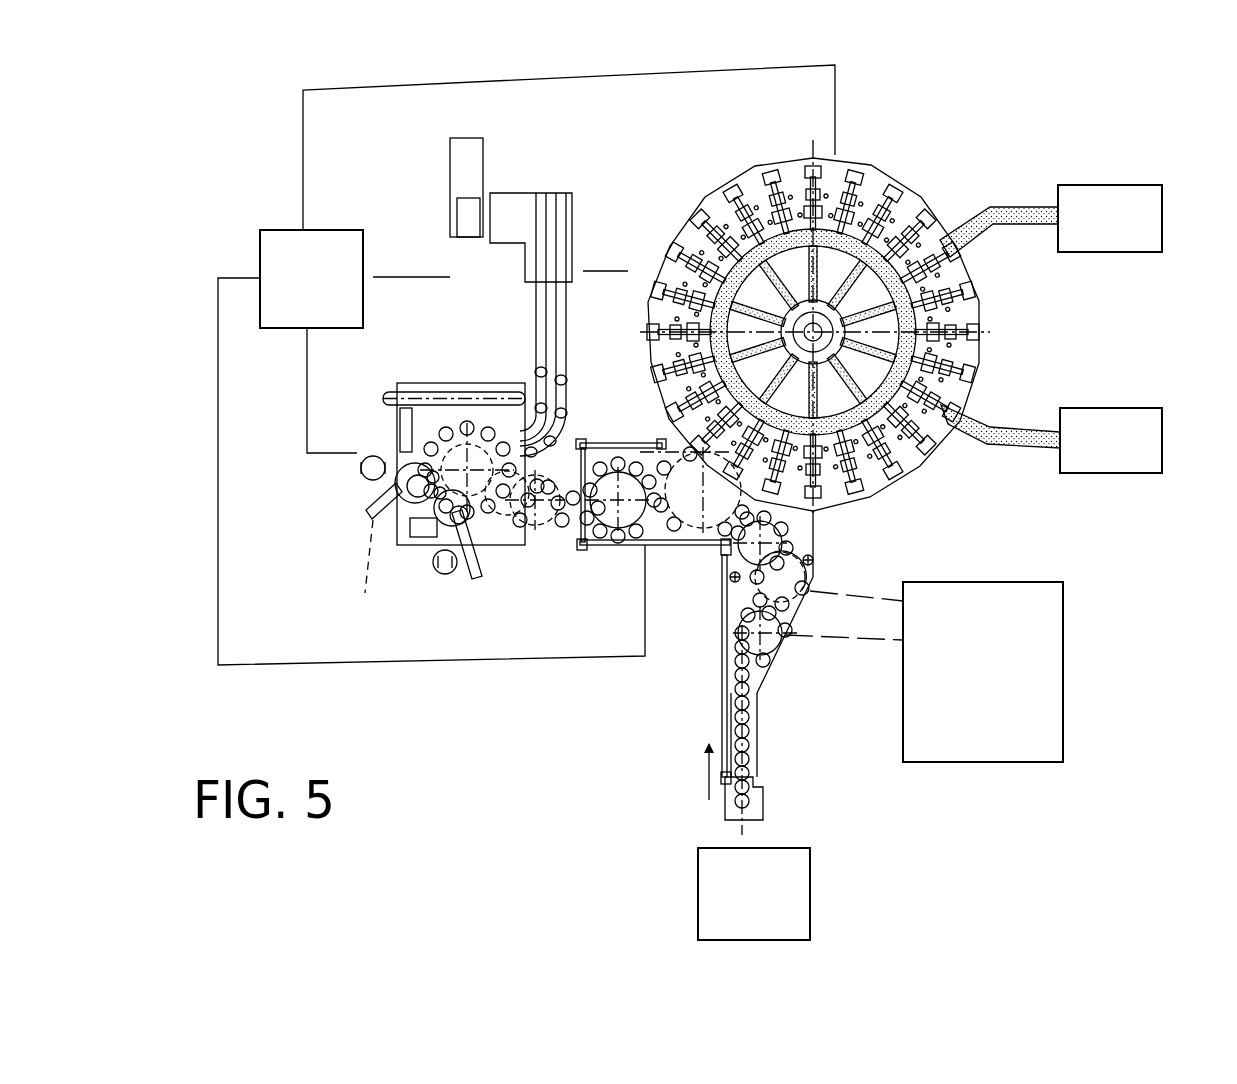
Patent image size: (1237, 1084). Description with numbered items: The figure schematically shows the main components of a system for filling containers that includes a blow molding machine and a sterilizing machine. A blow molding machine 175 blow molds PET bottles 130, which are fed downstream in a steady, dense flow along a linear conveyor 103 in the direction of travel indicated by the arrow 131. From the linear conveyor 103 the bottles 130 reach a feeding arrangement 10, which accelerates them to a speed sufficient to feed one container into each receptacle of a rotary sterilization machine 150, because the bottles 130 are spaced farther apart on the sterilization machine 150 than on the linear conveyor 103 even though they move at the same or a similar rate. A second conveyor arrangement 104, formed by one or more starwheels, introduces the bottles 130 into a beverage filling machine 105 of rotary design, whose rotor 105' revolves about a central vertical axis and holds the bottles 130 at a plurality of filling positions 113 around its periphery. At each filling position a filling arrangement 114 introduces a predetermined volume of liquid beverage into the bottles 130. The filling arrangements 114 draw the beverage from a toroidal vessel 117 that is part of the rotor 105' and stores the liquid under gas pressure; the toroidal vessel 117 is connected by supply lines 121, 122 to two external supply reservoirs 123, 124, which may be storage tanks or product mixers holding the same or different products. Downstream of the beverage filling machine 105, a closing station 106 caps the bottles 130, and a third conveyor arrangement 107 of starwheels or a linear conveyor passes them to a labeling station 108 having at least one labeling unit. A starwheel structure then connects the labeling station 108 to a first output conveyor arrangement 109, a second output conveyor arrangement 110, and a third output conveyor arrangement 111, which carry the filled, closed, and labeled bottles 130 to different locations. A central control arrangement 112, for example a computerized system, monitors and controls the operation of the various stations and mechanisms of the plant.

The feeding arrangement 10 is at (726, 671).
The linear conveyor 103 is at (758, 750).
The second conveyor arrangement 104 is at (732, 602).
The beverage filling machine 105 is at (867, 327).
The rotor 105' is at (813, 318).
The closing station 106 is at (635, 441).
The third conveyor arrangement 107 is at (588, 560).
The labeling station 108 is at (426, 582).
The first output conveyor arrangement 109 is at (566, 366).
The second output conveyor arrangement 110 is at (534, 308).
The third output conveyor arrangement 111 is at (428, 392).
The central control arrangement 112 is at (330, 304).
The filling positions 113 is at (970, 268).
The filling arrangement 114 is at (968, 355).
The toroidal vessel 117 is at (915, 480).
The supply line 121 is at (1010, 209).
The supply line 122 is at (1016, 424).
The external supply reservoir 123 is at (1152, 227).
The external supply reservoir 124 is at (1162, 447).
The bottles 130 is at (752, 763).
The arrow 131 is at (688, 772).
The sterilization machine 150 is at (1004, 668).
The blow molding machine 175 is at (773, 911).